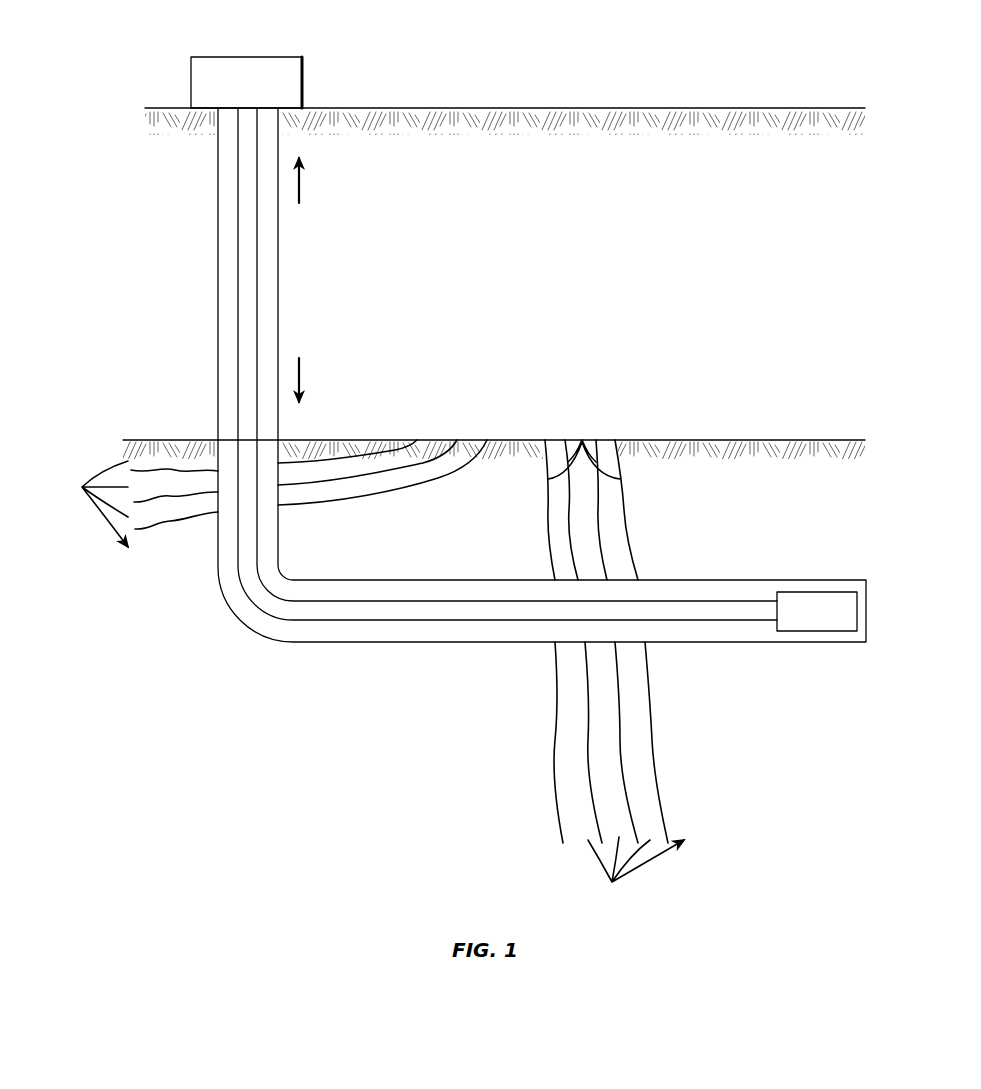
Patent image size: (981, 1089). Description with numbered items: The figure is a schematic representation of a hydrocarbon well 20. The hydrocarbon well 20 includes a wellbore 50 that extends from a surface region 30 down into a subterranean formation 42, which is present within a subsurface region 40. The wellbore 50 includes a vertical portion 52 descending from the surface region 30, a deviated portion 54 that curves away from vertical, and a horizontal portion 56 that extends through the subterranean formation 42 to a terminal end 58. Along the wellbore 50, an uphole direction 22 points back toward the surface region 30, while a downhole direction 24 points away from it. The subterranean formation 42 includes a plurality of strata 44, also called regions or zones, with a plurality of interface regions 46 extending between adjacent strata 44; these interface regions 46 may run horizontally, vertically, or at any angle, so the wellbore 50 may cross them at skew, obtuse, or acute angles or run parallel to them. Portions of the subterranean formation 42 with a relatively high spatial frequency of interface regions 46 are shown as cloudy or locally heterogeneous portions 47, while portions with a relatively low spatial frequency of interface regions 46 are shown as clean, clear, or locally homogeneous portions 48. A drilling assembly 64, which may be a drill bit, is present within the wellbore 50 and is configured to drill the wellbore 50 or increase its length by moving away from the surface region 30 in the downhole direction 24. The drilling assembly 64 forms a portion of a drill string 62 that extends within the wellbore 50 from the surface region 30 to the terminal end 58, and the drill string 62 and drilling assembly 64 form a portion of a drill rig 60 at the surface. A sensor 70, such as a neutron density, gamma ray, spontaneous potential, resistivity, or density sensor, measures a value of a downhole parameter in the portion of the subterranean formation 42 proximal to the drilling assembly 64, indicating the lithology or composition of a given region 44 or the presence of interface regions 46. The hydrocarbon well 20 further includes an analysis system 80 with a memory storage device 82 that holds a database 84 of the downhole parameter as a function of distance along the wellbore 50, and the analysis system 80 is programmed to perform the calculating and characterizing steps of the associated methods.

The hydrocarbon well 20 is at (166, 58).
The uphole direction 22 is at (303, 186).
The downhole direction 24 is at (303, 375).
The surface region 30 is at (603, 61).
The subsurface region 40 is at (603, 261).
The subterranean formation 42 is at (734, 473).
The strata 44 is at (366, 688).
The interface regions 46 is at (582, 440).
The cloudy portions 47 is at (90, 546).
The clean portions 48 is at (275, 739).
The wellbore 50 is at (218, 176).
The vertical portion 52 is at (188, 264).
The deviated portion 54 is at (185, 640).
The horizontal portion 56 is at (708, 651).
The terminal end 58 is at (879, 639).
The drill rig 60 is at (307, 82).
The drill string 62 is at (392, 620).
The drilling assembly 64 is at (795, 620).
The sensor 70 is at (847, 620).
The analysis system 80 is at (221, 72).
The memory storage device 82 is at (245, 66).
The database 84 is at (287, 66).